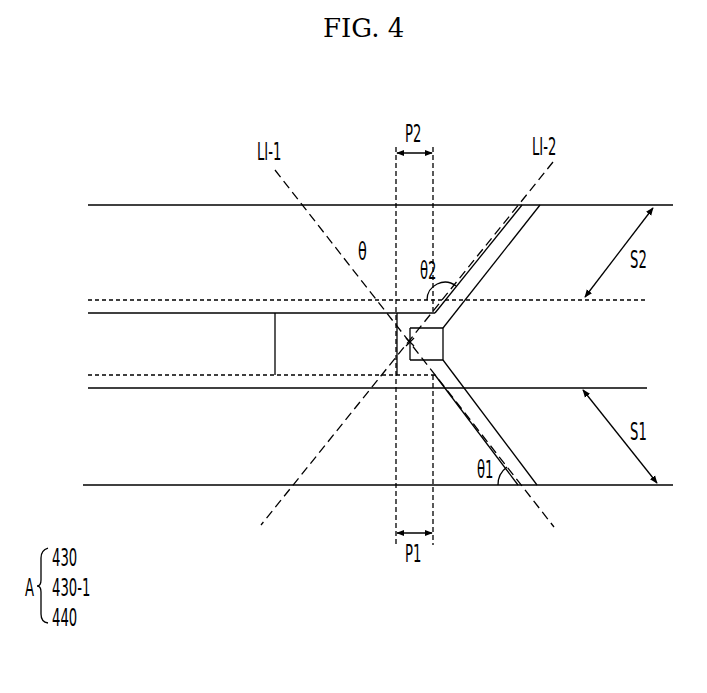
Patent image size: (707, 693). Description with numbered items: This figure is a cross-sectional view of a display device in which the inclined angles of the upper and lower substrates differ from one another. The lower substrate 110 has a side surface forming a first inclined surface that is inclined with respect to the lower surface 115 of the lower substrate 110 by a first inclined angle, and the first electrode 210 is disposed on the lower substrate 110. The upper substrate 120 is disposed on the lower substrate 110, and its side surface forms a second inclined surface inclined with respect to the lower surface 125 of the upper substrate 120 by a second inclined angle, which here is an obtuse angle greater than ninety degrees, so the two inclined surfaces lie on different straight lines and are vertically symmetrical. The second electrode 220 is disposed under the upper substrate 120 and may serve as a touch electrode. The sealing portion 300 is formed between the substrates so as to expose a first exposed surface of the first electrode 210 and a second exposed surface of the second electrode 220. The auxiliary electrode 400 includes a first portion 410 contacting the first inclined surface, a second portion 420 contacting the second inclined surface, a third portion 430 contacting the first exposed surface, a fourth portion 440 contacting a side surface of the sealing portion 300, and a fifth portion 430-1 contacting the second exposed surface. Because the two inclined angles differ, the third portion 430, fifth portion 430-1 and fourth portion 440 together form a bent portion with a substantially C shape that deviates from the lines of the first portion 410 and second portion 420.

The lower substrate 110 is at (100, 440).
The lower surface of the lower substrate 115 is at (241, 487).
The upper substrate 120 is at (100, 250).
The lower surface of the upper substrate 125 is at (108, 298).
The first electrode 210 is at (100, 380).
The second electrode 220 is at (100, 312).
The sealing portion 300 is at (310, 346).
The auxiliary electrode 400 is at (158, 518).
The first portion 410 is at (497, 430).
The second portion 420 is at (490, 270).
The third portion 430 is at (445, 358).
The fifth portion 430-1 is at (445, 333).
The fourth portion 440 is at (414, 342).